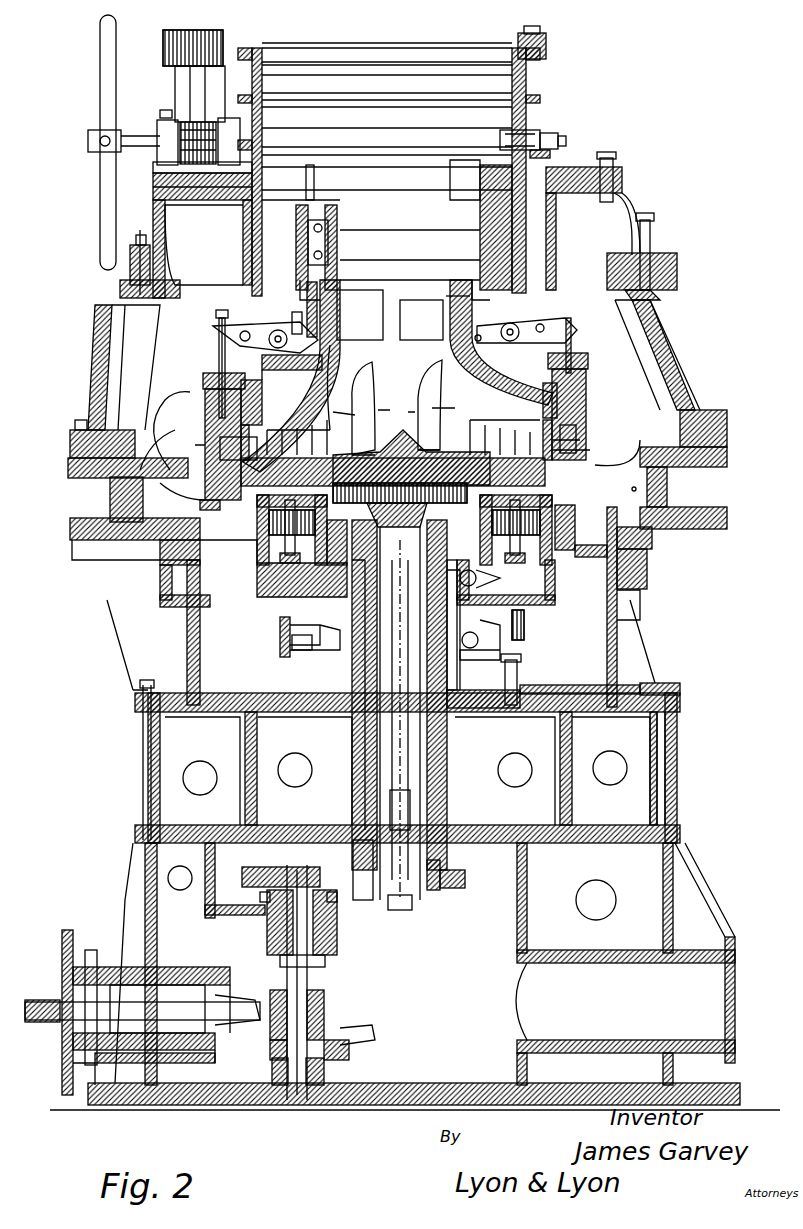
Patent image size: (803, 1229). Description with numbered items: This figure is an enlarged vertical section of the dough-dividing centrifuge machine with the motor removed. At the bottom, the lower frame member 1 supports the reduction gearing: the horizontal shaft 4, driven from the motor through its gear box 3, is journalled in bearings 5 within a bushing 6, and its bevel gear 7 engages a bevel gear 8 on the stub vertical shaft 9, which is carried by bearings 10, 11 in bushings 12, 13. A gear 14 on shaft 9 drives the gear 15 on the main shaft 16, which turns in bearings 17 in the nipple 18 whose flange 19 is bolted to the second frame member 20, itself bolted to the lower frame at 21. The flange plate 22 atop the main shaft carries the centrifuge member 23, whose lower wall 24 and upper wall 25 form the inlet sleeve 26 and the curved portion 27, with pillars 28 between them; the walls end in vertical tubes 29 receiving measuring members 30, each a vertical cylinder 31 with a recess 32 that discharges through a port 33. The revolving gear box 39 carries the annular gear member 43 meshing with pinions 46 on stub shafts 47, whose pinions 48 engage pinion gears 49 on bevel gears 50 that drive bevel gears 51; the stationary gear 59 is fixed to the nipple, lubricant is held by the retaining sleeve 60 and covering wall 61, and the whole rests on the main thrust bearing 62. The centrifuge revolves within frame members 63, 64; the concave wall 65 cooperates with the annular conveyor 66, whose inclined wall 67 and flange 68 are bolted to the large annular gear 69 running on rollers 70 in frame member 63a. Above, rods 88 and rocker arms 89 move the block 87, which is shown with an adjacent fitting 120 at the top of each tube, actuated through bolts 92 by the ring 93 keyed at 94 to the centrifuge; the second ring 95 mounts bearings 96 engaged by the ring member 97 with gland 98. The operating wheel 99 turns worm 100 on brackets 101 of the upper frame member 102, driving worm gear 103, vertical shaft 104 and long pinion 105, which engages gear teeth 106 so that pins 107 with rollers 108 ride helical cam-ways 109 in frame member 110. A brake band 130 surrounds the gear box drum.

The lower frame member 1 is at (128, 890).
The gear box 3 is at (225, 22).
The horizontal shaft 4 is at (45, 328).
The bearings 5 is at (50, 463).
The bushing 6 is at (50, 528).
The bevel gear 7 is at (200, 550).
The bevel gear 8 is at (187, 633).
The stub vertical shaft 9 is at (335, 1000).
The bearing 10 is at (345, 1060).
The bearing 11 is at (330, 965).
The bushing 12 is at (272, 1068).
The bushing 13 is at (337, 950).
The gear 14 is at (245, 876).
The gear 15 is at (465, 878).
The main shaft 16 is at (395, 900).
The bearings 17 is at (380, 620).
The nipple 18 is at (453, 745).
The flange 19 is at (520, 688).
The second frame member 20 is at (680, 744).
The bolting 21 is at (680, 698).
The flange plate 22 is at (432, 462).
The centrifuge member 23 is at (205, 402).
The lower wall 24 is at (335, 452).
The upper wall 25 is at (350, 410).
The inlet sleeve 26 is at (383, 320).
The downwardly and outwardly curved portion 27 is at (272, 420).
The pillars 28 is at (445, 402).
The vertical tubes 29 is at (205, 430).
The measuring members 30 is at (215, 450).
The vertical cylinder 31 is at (205, 496).
The recess 32 is at (399, 442).
The port 33 is at (205, 470).
The main revolving gear box member 39 is at (258, 572).
The annular gear member 43 is at (545, 532).
The pinions 46 is at (305, 500).
The vertical stub shaft 47 is at (298, 535).
The pinion 48 is at (300, 560).
The pinion gear 49 is at (490, 640).
The bevel gear 50 is at (555, 597).
The bevel gear 51 is at (478, 577).
The stationary gear 59 is at (380, 535).
The inner retaining sleeve 60 is at (350, 578).
The contorted covering wall 61 is at (345, 496).
The main thrust bearing 62 is at (280, 640).
The lower frame member 63 is at (105, 460).
The frame member 63a is at (630, 598).
The frame member 64 is at (135, 385).
The annular concave wall 65 is at (160, 440).
The annular conveyor 66 is at (140, 498).
The inclined wall 67 is at (632, 477).
The inturned flange member 68 is at (633, 490).
The large annular gear 69 is at (640, 550).
The rollers 70 is at (648, 572).
The block 87 is at (243, 408).
The rods 88 is at (219, 350).
The rocker arms 89 is at (592, 322).
The vertical bolts 92 is at (449, 294).
The ring 93 is at (302, 318).
The sliding key 94 is at (342, 302).
The second ring member 95 is at (340, 216).
The bearings 96 is at (306, 215).
The ring member 97 is at (262, 130).
The gland 98 is at (312, 175).
The operating wheel 99 is at (102, 98).
The worm 100 is at (228, 118).
The brackets 101 is at (162, 166).
The upper frame member 102 is at (152, 212).
The worm gear 103 is at (156, 122).
The vertical shaft 104 is at (175, 90).
The long pinion gear 105 is at (163, 50).
The gear teeth 106 is at (548, 49).
The pins 107 is at (512, 137).
The rollers 108 is at (546, 130).
The helical cam-ways 109 is at (262, 100).
The frame member 110 is at (152, 188).
The nut 120 is at (206, 378).
The brake band 130 is at (525, 630).